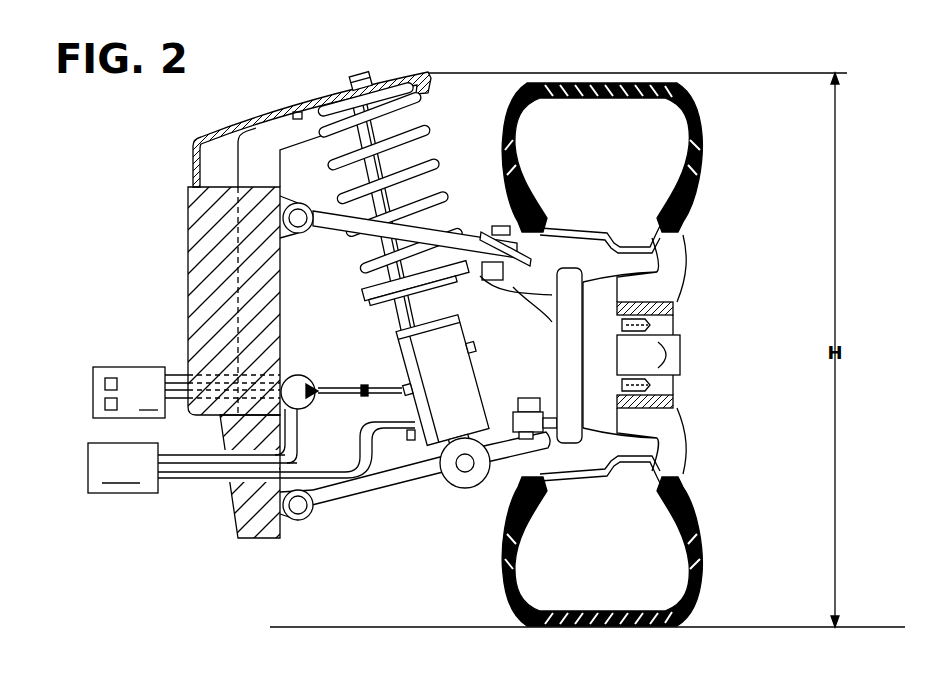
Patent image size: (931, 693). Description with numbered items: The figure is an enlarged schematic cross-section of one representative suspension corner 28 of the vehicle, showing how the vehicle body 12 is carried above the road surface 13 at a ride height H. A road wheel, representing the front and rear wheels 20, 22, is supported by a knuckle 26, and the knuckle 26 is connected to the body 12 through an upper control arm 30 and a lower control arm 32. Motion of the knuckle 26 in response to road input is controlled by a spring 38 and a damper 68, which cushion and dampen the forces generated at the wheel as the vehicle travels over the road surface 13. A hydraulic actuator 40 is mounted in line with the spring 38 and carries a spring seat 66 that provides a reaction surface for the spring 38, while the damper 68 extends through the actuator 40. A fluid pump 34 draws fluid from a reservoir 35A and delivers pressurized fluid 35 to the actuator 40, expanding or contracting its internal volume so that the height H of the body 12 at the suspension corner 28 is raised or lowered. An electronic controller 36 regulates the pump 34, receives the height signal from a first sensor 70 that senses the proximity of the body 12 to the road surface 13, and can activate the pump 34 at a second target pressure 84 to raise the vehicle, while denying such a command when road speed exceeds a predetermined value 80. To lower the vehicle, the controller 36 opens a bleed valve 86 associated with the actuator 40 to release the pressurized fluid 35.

The vehicle body 12 is at (343, 80).
The road surface 13 is at (548, 633).
The front wheels 20 is at (693, 538).
The rear wheels 22 is at (613, 354).
The knuckle 26 is at (598, 300).
The suspension corner 28 is at (516, 60).
The upper control arm 30 is at (466, 252).
The lower control arm 32 is at (381, 490).
The fluid pump 34 is at (298, 375).
The pressurized fluid 35 is at (361, 397).
The reservoir 35A is at (251, 457).
The electronic controller 36 is at (186, 392).
The spring 38 is at (354, 266).
The hydraulic actuator 40 is at (462, 371).
The spring seat 66 is at (360, 303).
The damper 68 is at (386, 123).
The first sensor 70 is at (295, 110).
The predetermined value 80 is at (104, 404).
The second target pressure 84 is at (104, 384).
The bleed valve 86 is at (412, 442).